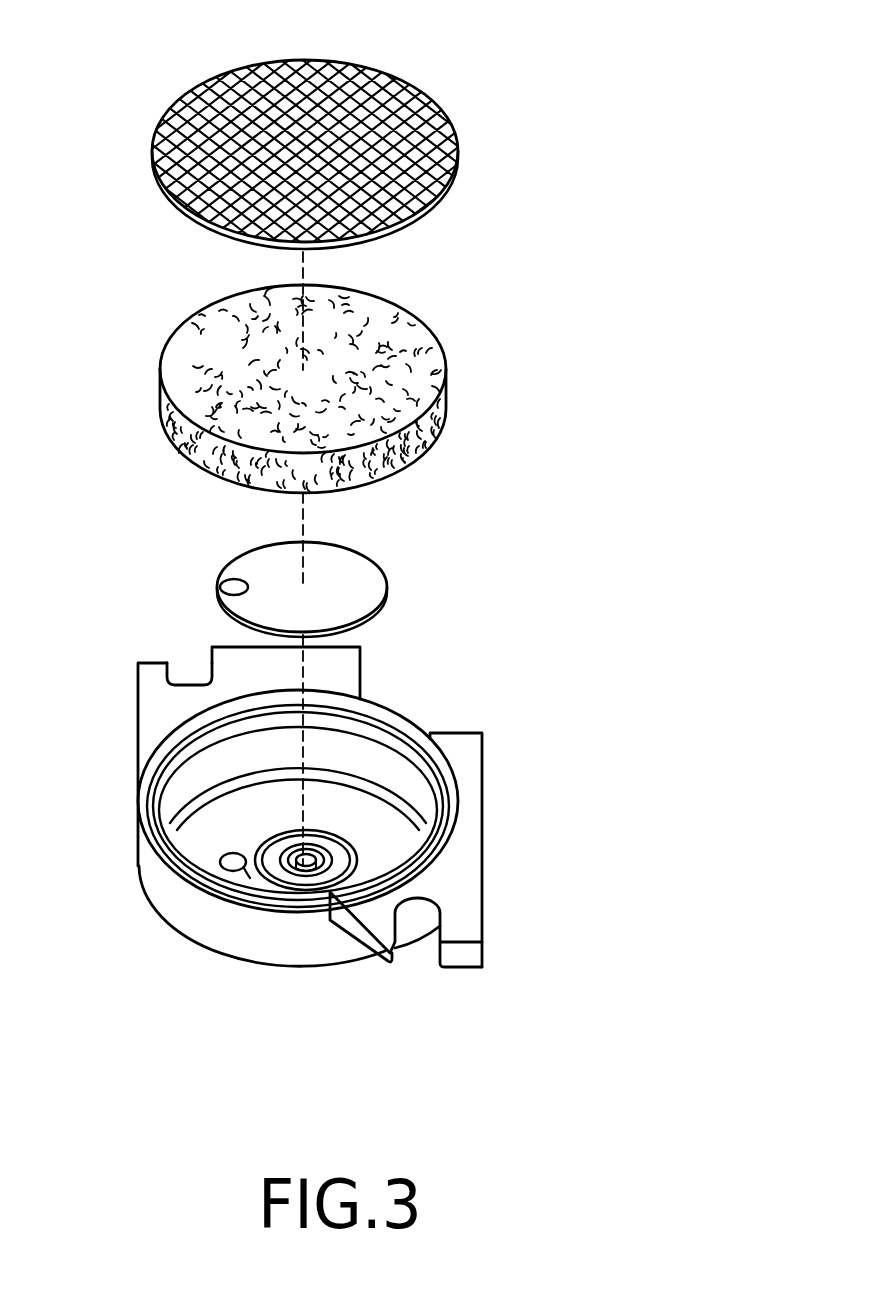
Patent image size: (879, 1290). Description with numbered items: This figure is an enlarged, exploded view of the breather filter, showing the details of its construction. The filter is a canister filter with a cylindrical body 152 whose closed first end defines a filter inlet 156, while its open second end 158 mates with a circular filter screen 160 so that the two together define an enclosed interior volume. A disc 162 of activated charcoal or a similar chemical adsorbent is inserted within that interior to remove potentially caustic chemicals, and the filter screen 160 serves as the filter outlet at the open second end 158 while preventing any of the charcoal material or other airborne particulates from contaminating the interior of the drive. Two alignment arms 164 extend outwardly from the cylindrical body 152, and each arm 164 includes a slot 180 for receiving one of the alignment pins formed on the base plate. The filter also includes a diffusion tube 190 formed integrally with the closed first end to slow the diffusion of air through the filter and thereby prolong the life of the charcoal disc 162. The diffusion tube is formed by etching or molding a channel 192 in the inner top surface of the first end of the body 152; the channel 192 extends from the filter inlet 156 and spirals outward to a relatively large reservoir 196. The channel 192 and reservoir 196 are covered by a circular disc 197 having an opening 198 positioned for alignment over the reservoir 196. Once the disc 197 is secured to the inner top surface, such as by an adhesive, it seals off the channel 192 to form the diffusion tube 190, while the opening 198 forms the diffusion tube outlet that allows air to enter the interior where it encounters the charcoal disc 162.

The cylindrical body 152 is at (267, 950).
The filter inlet 156 is at (310, 860).
The open second end 158 is at (193, 873).
The filter screen 160 is at (178, 123).
The disc of activated charcoal 162 is at (197, 347).
The alignment arm 164 is at (350, 668).
The slot 180 is at (212, 668).
The diffusion tube 190 is at (273, 837).
The channel 192 is at (358, 853).
The reservoir 196 is at (223, 858).
The disc 197 is at (375, 585).
The opening 198 is at (228, 582).